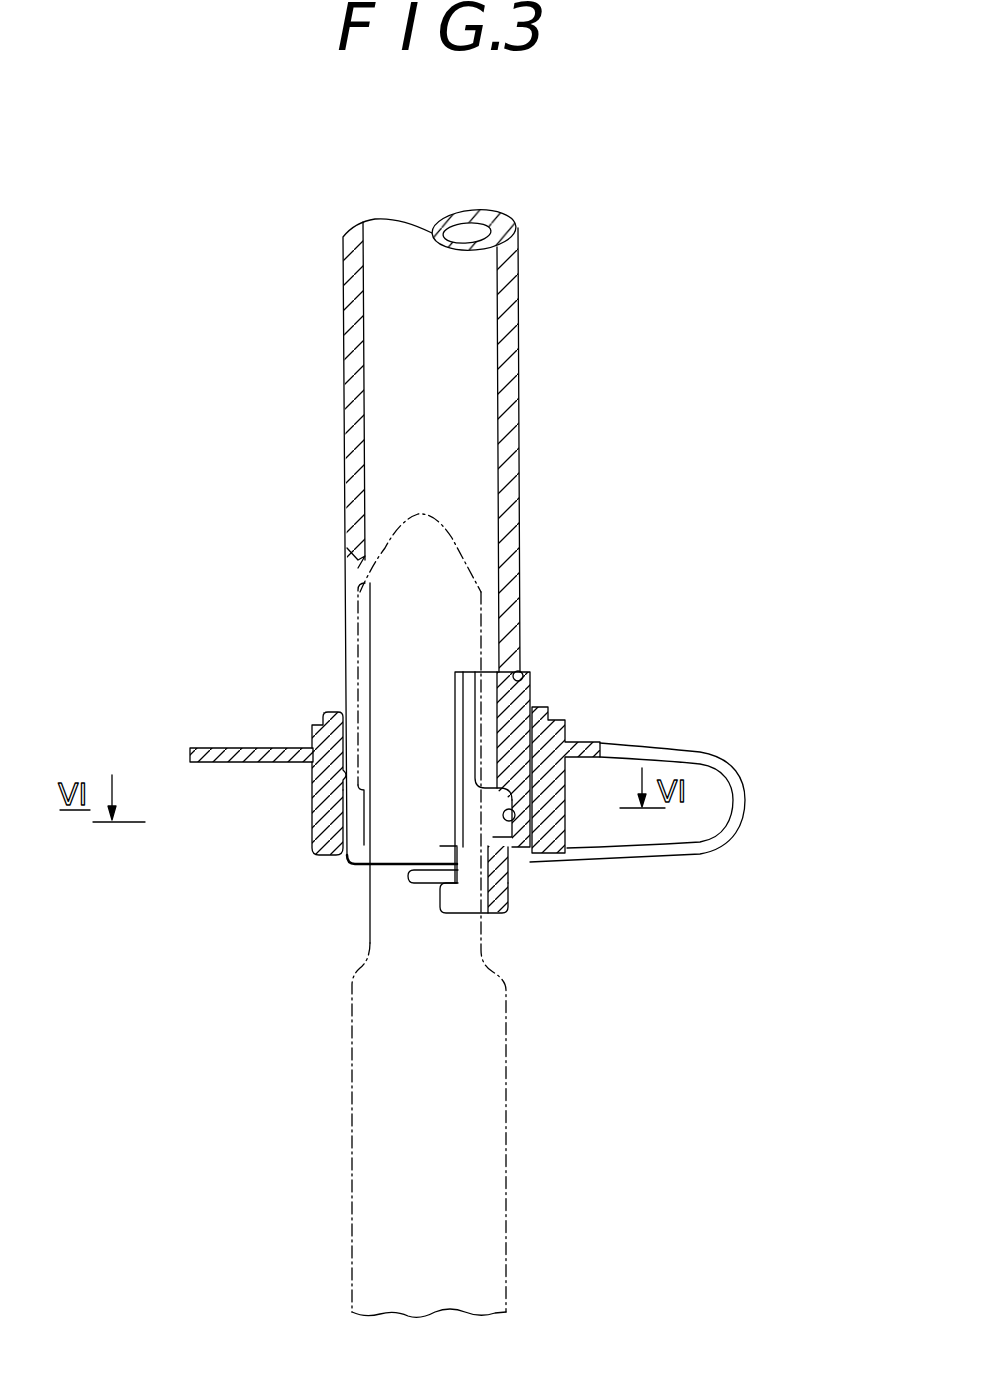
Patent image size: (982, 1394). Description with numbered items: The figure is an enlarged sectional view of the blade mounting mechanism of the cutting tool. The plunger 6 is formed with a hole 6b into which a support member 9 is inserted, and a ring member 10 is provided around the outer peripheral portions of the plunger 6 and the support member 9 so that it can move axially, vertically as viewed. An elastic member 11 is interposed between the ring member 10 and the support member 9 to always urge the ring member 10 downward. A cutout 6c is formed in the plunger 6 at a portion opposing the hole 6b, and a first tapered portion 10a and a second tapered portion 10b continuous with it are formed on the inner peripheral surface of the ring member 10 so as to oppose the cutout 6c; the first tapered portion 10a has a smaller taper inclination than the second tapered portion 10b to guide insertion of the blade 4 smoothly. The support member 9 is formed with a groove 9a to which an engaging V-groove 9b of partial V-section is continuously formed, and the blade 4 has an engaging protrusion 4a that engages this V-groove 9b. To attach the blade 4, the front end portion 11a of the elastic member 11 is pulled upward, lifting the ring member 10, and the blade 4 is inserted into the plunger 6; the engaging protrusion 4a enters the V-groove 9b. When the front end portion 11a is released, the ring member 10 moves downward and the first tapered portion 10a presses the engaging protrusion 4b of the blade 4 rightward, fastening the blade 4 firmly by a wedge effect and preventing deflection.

The blade 4 is at (508, 1233).
The engaging protrusion 4a is at (497, 830).
The engaging protrusion 4b is at (345, 596).
The plunger 6 is at (470, 330).
The hole 6b is at (530, 676).
The cutout 6c is at (346, 563).
The support member 9 is at (530, 696).
The groove 9a is at (490, 928).
The engaging V-groove 9b is at (512, 838).
The ring member 10 is at (553, 787).
The first tapered portion 10a is at (313, 780).
The second tapered portion 10b is at (333, 855).
The elastic member 11 is at (738, 792).
The front end portion 11a is at (213, 748).